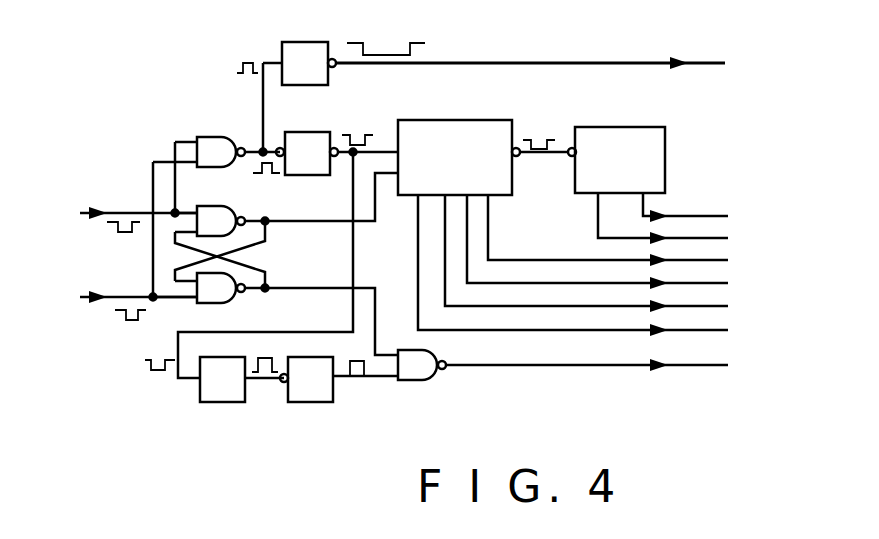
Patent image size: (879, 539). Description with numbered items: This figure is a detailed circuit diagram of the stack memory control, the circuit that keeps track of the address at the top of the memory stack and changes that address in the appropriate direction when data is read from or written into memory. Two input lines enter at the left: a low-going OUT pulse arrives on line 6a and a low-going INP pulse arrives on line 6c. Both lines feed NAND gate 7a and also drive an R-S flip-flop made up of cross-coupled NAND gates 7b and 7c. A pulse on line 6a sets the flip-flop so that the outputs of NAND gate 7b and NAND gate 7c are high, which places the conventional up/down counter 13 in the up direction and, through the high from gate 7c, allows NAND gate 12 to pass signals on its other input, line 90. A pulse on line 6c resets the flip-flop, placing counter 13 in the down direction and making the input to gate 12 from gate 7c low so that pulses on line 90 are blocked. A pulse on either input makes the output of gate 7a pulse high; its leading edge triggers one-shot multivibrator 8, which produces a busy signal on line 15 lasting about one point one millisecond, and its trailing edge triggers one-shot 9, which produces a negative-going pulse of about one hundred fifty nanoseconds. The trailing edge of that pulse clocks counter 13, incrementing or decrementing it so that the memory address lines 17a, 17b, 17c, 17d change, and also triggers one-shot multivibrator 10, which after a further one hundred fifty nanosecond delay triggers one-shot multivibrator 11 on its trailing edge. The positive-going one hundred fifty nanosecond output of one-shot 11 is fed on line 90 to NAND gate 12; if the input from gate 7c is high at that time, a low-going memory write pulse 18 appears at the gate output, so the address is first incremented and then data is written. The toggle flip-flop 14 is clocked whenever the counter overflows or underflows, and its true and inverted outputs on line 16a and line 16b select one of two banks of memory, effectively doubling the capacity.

The line 6a is at (118, 297).
The line 6c is at (117, 213).
The NAND gate 7a is at (213, 137).
The NAND gate 7b is at (226, 206).
The NAND gate 7c is at (228, 303).
The one-shot multivibrator 8 is at (306, 42).
The one-shot 9 is at (310, 132).
The one-shot multivibrator 10 is at (225, 357).
The one-shot multivibrator 11 is at (308, 402).
The NAND gate 12 is at (430, 351).
The up/down counter 13 is at (437, 120).
The toggle flip-flop 14 is at (620, 127).
The busy signal line 15 is at (587, 62).
The line 16a is at (707, 210).
The line 16b is at (707, 232).
The memory address line 17a is at (707, 254).
The memory address line 17b is at (707, 277).
The memory address line 17c is at (707, 300).
The memory address line 17d is at (707, 324).
The memory write pulse 18 is at (706, 356).
The line 90 is at (359, 377).